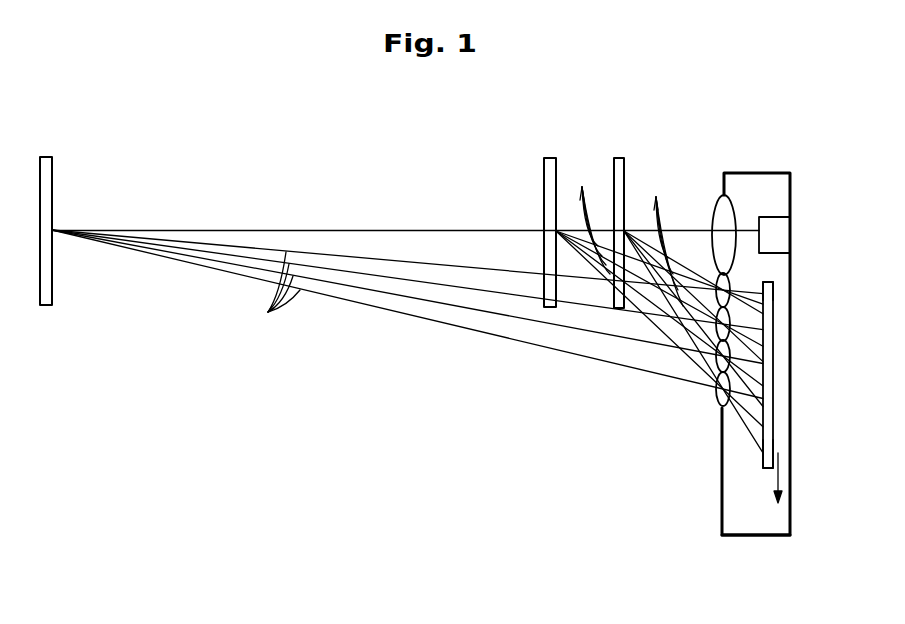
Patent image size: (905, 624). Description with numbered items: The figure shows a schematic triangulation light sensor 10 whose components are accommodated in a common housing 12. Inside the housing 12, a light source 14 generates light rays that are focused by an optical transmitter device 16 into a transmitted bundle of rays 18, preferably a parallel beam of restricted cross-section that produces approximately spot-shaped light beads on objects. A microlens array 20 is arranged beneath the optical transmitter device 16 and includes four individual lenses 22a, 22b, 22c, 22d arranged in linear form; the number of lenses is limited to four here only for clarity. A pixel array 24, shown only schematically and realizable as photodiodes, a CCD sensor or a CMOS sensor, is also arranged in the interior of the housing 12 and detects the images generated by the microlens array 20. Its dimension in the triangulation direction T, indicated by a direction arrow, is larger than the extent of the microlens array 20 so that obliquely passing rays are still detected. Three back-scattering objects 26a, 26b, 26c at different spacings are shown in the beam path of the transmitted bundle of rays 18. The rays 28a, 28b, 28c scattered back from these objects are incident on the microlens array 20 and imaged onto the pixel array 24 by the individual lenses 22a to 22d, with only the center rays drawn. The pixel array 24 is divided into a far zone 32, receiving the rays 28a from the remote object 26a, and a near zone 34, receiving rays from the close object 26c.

The triangulation light sensor 10 is at (750, 170).
The housing 12 is at (752, 537).
The light source 14 is at (775, 233).
The optical transmitter device 16 is at (717, 210).
The transmitted bundle of rays 18 is at (388, 230).
The microlens array 20 is at (639, 391).
The individual lens 22a is at (718, 292).
The individual lens 22b is at (718, 326).
The individual lens 22c is at (718, 358).
The individual lens 22d is at (718, 392).
The pixel array 24 is at (775, 363).
The object 26a is at (46, 176).
The object 26b is at (546, 170).
The object 26c is at (622, 170).
The back-scattered rays 28a is at (261, 289).
The back-scattered rays 28b is at (589, 215).
The back-scattered rays 28c is at (670, 240).
The far zone 32 is at (775, 288).
The near zone 34 is at (773, 446).
The triangulation direction T is at (780, 482).